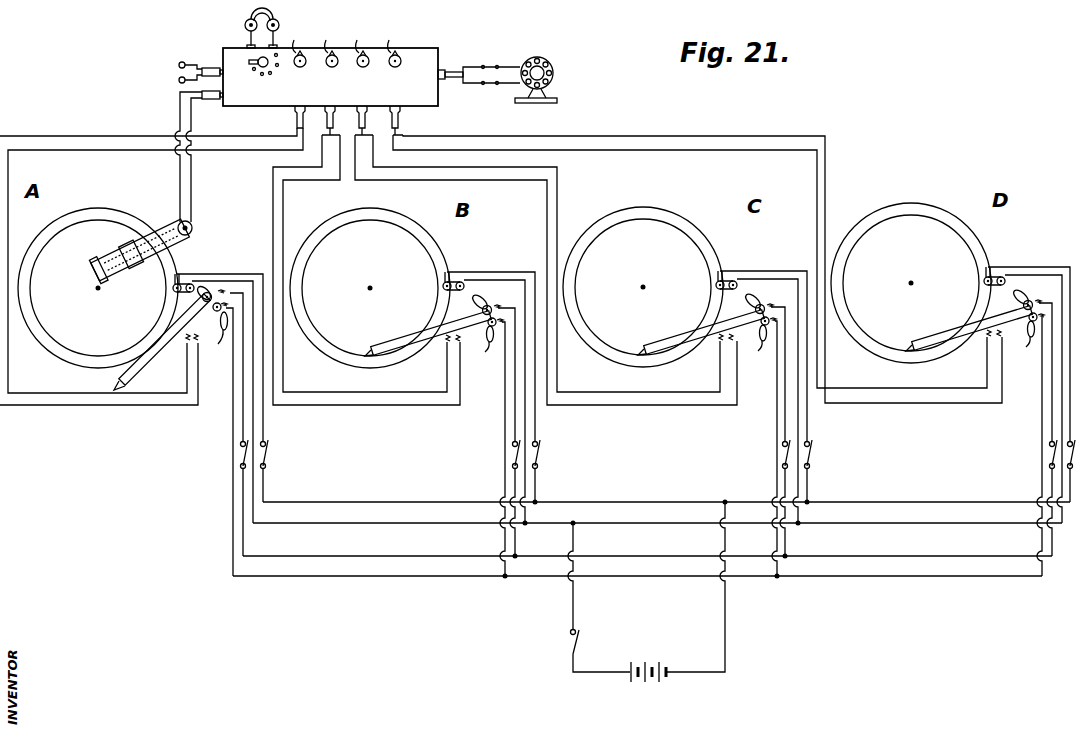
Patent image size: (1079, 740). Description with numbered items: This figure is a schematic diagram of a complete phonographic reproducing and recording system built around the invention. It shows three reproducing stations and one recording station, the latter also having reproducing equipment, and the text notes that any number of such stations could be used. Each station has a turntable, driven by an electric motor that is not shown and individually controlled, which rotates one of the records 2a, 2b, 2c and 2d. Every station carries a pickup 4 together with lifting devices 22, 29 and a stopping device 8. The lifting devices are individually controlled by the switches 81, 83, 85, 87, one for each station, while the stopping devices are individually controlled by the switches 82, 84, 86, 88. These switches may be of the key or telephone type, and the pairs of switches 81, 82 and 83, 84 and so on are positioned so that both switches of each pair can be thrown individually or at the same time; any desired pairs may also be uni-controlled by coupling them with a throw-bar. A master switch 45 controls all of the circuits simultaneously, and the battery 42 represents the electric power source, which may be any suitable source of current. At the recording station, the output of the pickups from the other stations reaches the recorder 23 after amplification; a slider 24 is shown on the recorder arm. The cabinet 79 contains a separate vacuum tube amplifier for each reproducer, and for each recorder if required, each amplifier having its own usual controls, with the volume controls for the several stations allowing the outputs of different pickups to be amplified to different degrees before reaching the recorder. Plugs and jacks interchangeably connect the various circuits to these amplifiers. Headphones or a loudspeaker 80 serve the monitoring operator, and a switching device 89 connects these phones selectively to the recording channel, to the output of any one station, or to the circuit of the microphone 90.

The cabinet 79 is at (430, 47).
The headphones or loudspeaker 80 is at (279, 23).
The switching device 89 is at (258, 58).
The microphone 90 is at (558, 73).
The record 2a is at (94, 226).
The record 2b is at (372, 226).
The record 2c is at (650, 225).
The record 2d is at (922, 221).
The recorder 23 is at (166, 215).
The slider on pickup arm 24 is at (147, 265).
The stopping device 8 is at (192, 283).
The lifting device 22 is at (210, 292).
The lifting device 29 is at (620, 344).
The pickup 4 is at (170, 354).
The switch 81 is at (240, 458).
The switch 82 is at (270, 451).
The switch 83 is at (512, 458).
The switch 84 is at (538, 451).
The switch 85 is at (782, 458).
The switch 86 is at (810, 449).
The switch 87 is at (1048, 458).
The switch 88 is at (1078, 449).
The master switch 45 is at (570, 652).
The battery 42 is at (652, 661).